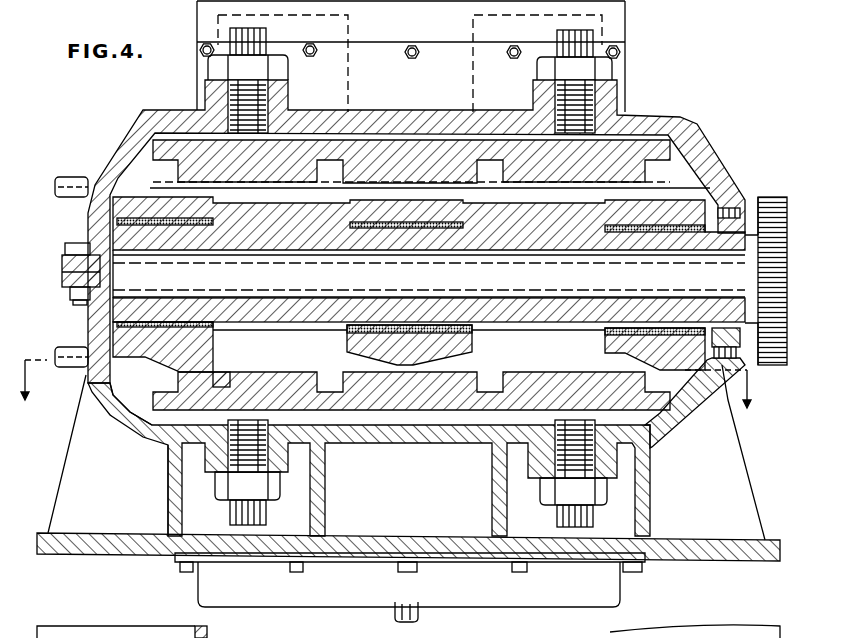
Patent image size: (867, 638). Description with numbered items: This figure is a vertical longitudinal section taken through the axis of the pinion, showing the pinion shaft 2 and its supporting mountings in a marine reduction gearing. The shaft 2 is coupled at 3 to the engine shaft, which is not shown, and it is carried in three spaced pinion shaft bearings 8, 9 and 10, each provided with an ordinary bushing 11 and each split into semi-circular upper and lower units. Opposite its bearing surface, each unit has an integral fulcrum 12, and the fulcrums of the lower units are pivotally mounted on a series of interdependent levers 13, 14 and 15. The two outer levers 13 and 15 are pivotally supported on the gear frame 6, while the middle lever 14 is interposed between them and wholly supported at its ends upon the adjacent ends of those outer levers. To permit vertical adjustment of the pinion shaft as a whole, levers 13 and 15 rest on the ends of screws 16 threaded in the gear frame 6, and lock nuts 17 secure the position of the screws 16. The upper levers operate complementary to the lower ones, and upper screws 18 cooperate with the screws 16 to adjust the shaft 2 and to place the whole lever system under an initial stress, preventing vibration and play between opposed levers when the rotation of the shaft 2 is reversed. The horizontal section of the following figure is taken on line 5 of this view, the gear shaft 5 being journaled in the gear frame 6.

The shaft 2 is at (133, 233).
The coupling 3 is at (765, 368).
The shaft 5 is at (385, 394).
The gear frame 6 is at (400, 537).
The pinion shaft bearing 8 is at (137, 338).
The pinion shaft bearing 9 is at (422, 343).
The pinion shaft bearing 10 is at (658, 347).
The bushing 11 is at (170, 323).
The fulcrum 12 is at (155, 380).
The lever 13 is at (160, 385).
The lever 14 is at (420, 395).
The lever 15 is at (628, 408).
The screw 16 is at (240, 463).
The lock nut 17 is at (280, 487).
The upper screw 18 is at (233, 92).